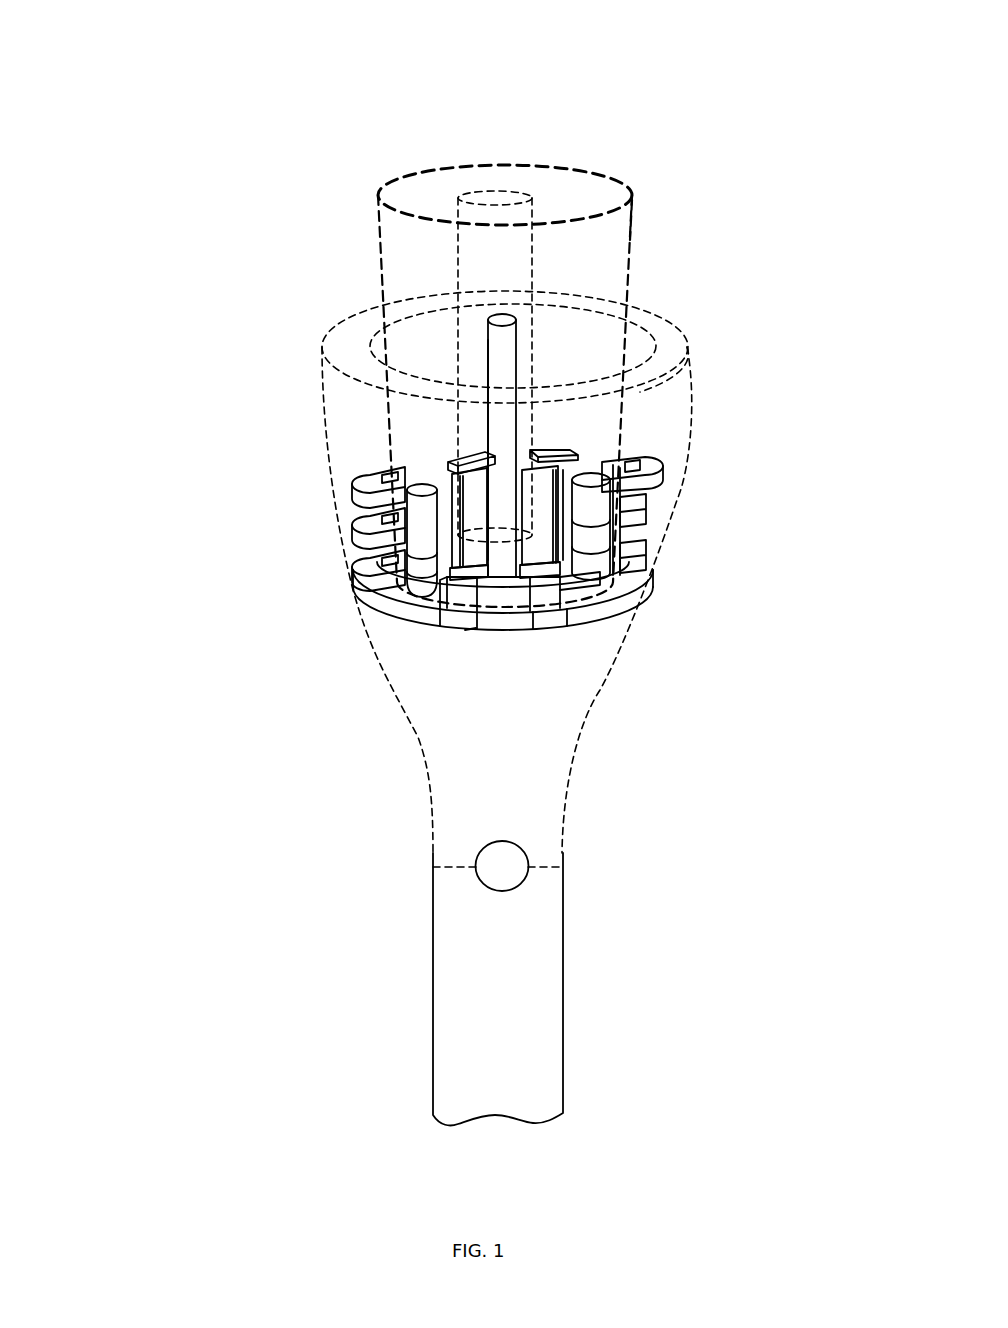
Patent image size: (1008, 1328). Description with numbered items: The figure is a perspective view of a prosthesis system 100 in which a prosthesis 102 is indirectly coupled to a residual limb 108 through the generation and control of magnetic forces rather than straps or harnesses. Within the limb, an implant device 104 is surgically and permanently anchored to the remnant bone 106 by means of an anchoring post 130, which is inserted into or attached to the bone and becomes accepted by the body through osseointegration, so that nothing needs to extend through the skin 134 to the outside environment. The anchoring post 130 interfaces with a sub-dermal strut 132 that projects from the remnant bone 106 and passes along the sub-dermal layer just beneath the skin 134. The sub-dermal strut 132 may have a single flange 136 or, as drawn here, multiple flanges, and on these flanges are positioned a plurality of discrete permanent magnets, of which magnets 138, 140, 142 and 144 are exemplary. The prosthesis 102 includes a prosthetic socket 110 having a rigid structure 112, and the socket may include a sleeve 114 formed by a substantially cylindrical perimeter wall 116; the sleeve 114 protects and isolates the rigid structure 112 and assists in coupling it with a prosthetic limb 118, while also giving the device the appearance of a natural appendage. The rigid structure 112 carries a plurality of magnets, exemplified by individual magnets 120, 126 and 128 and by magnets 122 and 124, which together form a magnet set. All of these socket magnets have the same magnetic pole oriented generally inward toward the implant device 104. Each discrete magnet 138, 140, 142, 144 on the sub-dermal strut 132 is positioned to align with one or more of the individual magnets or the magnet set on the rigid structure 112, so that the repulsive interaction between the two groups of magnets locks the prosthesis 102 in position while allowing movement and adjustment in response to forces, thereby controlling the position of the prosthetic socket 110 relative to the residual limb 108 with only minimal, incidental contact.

The prosthesis system 100 is at (772, 127).
The prosthesis 102 is at (757, 293).
The implant device 104 is at (490, 353).
The remnant bone 106 is at (472, 212).
The residual limb 108 is at (395, 258).
The prosthetic socket 110 is at (564, 681).
The rigid structure 112 is at (613, 600).
The sleeve 114 is at (673, 353).
The perimeter wall 116 is at (360, 390).
The prosthetic limb 118 is at (482, 1014).
The magnet 120 is at (363, 491).
The magnet 122 is at (365, 555).
The magnet 124 is at (365, 590).
The magnet 126 is at (475, 633).
The magnet 128 is at (648, 484).
The anchoring post 130 is at (508, 340).
The sub-dermal strut 132 is at (583, 575).
The skin 134 is at (632, 236).
The flange 136 is at (592, 556).
The discrete magnet 138 is at (420, 493).
The discrete magnet 140 is at (452, 591).
The discrete magnet 142 is at (452, 616).
The discrete magnet 144 is at (590, 472).